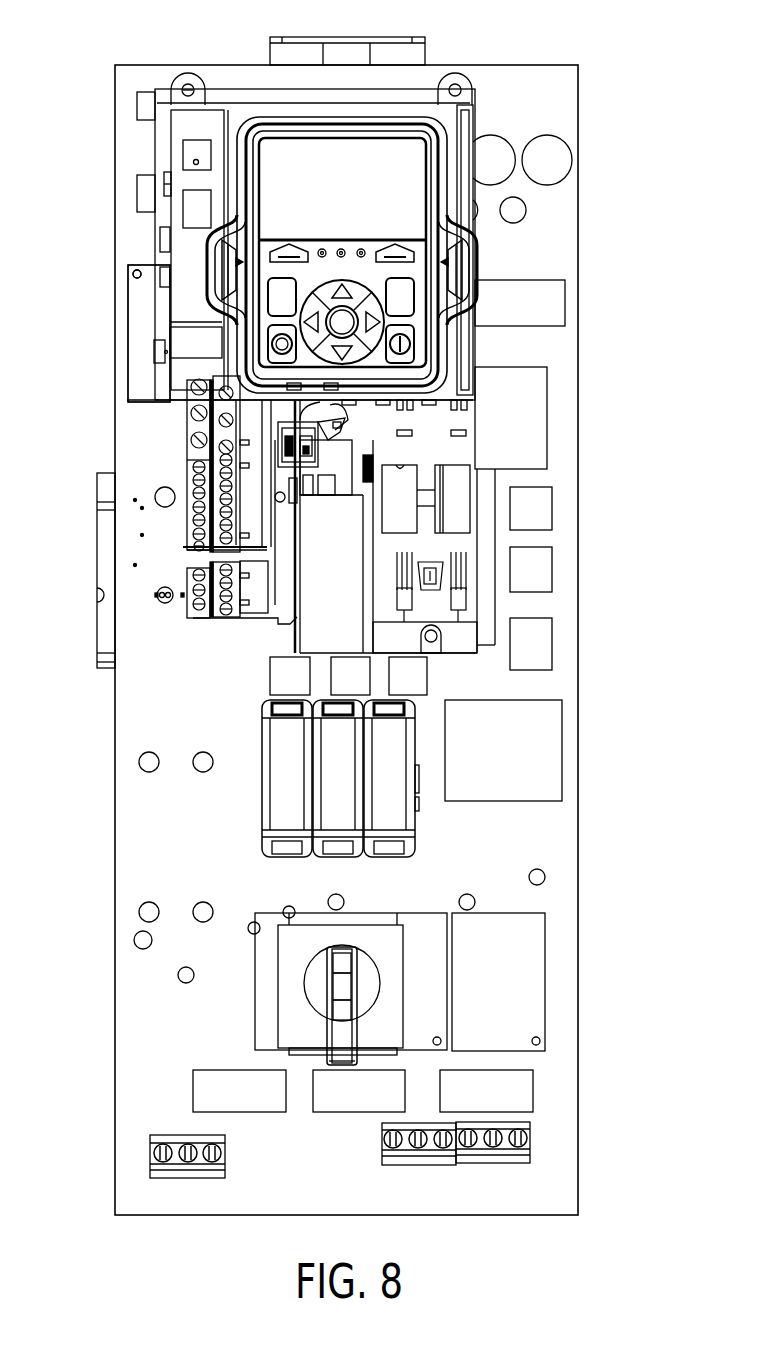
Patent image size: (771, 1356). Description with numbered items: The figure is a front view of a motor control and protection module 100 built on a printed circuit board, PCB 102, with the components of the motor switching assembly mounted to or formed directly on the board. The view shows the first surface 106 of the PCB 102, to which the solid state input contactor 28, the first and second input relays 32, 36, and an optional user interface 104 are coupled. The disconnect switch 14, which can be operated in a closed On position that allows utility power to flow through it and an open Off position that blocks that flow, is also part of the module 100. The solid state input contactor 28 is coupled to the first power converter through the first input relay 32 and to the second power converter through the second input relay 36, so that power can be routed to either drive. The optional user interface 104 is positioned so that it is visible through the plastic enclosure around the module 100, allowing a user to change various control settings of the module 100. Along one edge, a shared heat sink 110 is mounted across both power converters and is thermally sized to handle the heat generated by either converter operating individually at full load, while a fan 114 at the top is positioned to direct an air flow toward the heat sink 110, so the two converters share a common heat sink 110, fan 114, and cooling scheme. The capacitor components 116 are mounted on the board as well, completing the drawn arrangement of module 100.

The motor control and protection module 100 is at (637, 97).
The PCB 102 is at (492, 65).
The user interface 104 is at (201, 263).
The first surface 106 is at (549, 113).
The heat sink 110 is at (97, 550).
The fan 114 is at (347, 37).
The capacitor bank 116 is at (256, 781).
The disconnect switch 14 is at (310, 1003).
The solid state input contactor 28 is at (555, 978).
The first input relay 32 is at (123, 316).
The second input relay 36 is at (149, 333).